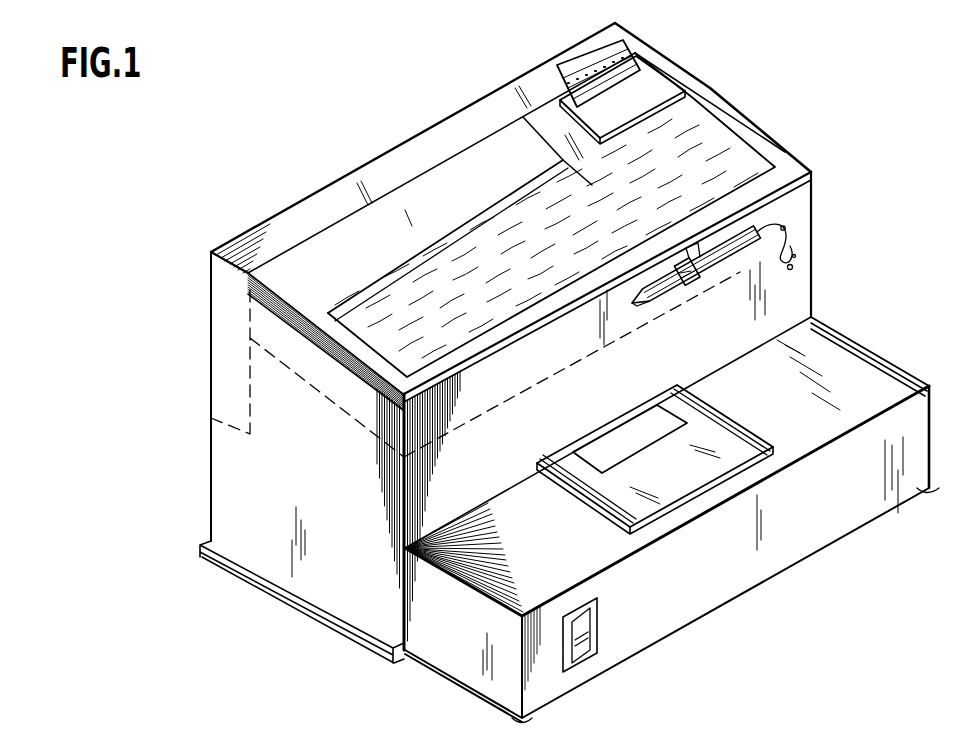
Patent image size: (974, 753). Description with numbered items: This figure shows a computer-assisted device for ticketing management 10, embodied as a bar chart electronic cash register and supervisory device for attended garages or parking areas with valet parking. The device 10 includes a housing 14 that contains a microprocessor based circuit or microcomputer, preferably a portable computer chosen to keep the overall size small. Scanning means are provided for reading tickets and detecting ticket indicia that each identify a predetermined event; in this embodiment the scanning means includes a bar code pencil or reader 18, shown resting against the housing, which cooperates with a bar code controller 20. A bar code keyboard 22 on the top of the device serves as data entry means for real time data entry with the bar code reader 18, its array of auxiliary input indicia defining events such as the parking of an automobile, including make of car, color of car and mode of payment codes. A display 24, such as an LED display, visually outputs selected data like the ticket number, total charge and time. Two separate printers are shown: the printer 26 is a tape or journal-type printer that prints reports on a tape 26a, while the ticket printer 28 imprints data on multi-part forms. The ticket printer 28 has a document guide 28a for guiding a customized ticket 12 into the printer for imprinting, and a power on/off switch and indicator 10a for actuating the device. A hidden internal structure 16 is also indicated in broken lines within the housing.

The computer-assisted system or device for ticketing management 10 is at (852, 585).
The power on/off switch and indicator 10a is at (598, 641).
The customized ticket 12 is at (610, 463).
The housing 14 is at (320, 580).
The hidden internal tray 16 is at (350, 408).
The bar code pencil or reader 18 is at (668, 286).
The bar code controller 20 is at (235, 310).
The bar code keyboard 22 is at (735, 150).
The display 24 is at (353, 247).
The tape or journal-type printer 26 is at (662, 88).
The tape 26a is at (582, 62).
The ticket printer 28 is at (883, 350).
The document guide 28a is at (742, 440).